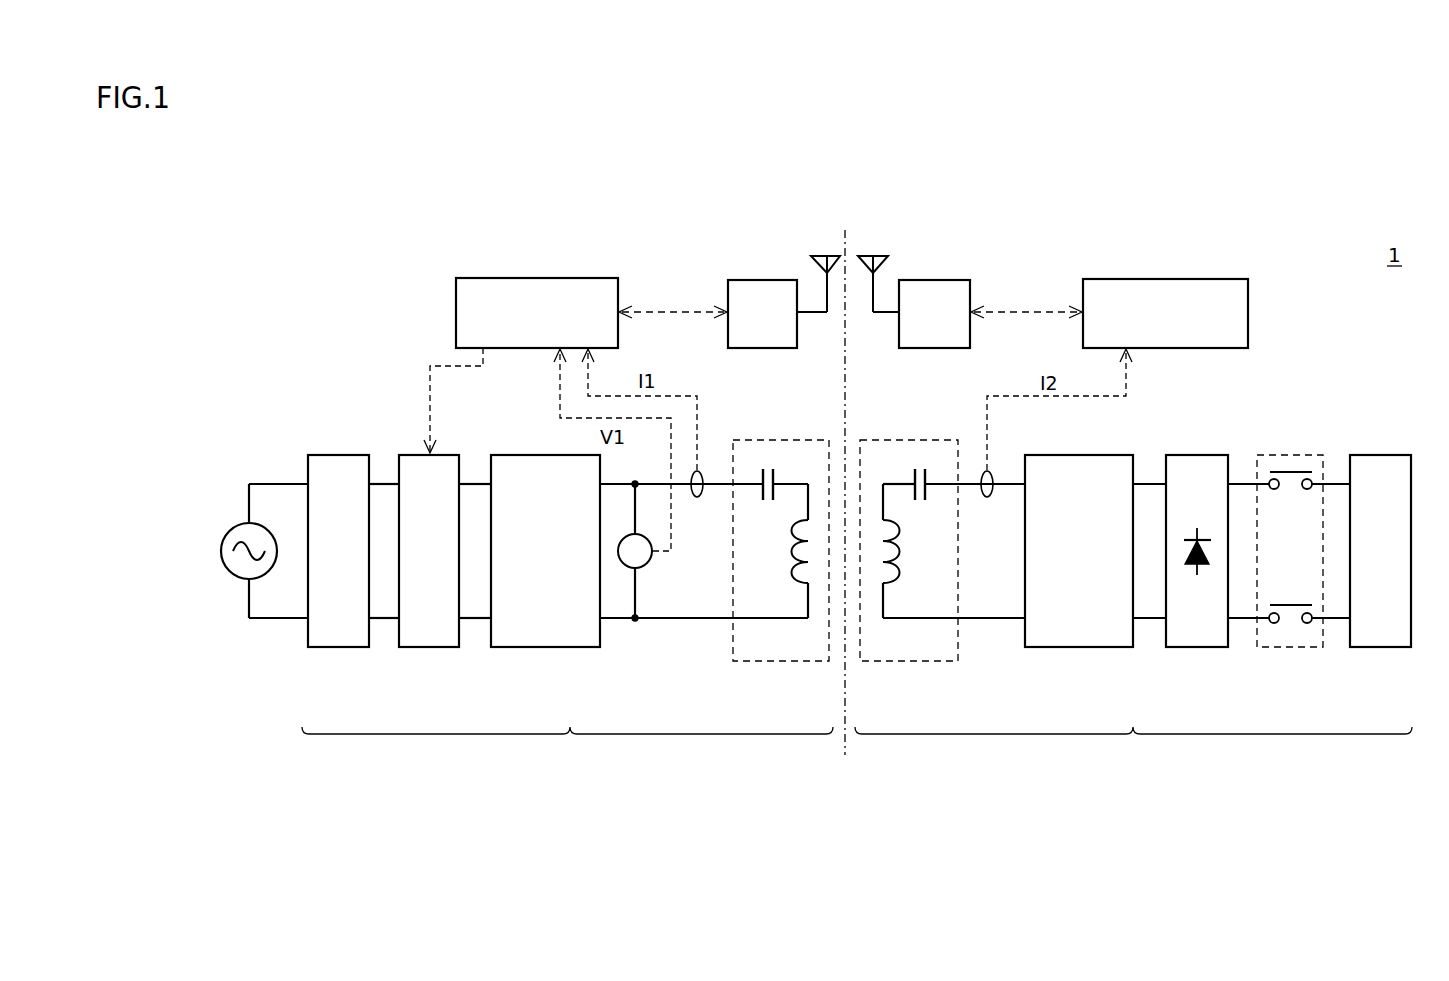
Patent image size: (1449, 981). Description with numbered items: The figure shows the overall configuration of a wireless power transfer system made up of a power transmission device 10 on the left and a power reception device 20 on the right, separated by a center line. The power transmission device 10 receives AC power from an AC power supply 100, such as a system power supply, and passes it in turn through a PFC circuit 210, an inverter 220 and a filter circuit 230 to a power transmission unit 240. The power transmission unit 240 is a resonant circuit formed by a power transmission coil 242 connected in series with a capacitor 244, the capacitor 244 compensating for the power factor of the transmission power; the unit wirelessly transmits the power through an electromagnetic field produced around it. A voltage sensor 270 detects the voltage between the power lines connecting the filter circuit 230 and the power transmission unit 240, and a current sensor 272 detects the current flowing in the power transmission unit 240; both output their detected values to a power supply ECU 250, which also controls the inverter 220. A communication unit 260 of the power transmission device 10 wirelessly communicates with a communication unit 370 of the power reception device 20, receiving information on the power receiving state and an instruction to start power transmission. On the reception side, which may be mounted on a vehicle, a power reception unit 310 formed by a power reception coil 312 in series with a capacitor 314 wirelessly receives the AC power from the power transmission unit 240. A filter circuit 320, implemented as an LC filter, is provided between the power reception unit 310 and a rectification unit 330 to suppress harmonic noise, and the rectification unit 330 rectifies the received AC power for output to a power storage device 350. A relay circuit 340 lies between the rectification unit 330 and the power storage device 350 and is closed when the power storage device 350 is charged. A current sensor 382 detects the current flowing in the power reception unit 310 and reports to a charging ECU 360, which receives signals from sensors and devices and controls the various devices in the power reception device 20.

The power transmission device 10 is at (567, 747).
The power reception device 20 is at (1133, 747).
The AC power supply 100 is at (230, 526).
The PFC circuit 210 is at (337, 647).
The inverter 220 is at (426, 647).
The filter circuit 230 is at (546, 647).
The power transmission unit 240 is at (801, 440).
The power transmission coil 242 is at (804, 583).
The capacitor 244 is at (760, 469).
The power supply ECU 250 is at (562, 278).
The communication unit 260 is at (765, 280).
The voltage sensor 270 is at (649, 561).
The current sensor 272 is at (704, 476).
The power reception unit 310 is at (886, 440).
The power reception coil 312 is at (888, 583).
The capacitor 314 is at (927, 469).
The filter circuit 320 is at (1071, 647).
The rectification unit 330 is at (1196, 647).
The relay circuit 340 is at (1290, 455).
The power storage device 350 is at (1380, 455).
The charging ECU 360 is at (1213, 279).
The communication unit 370 is at (937, 280).
The current sensor 382 is at (994, 478).